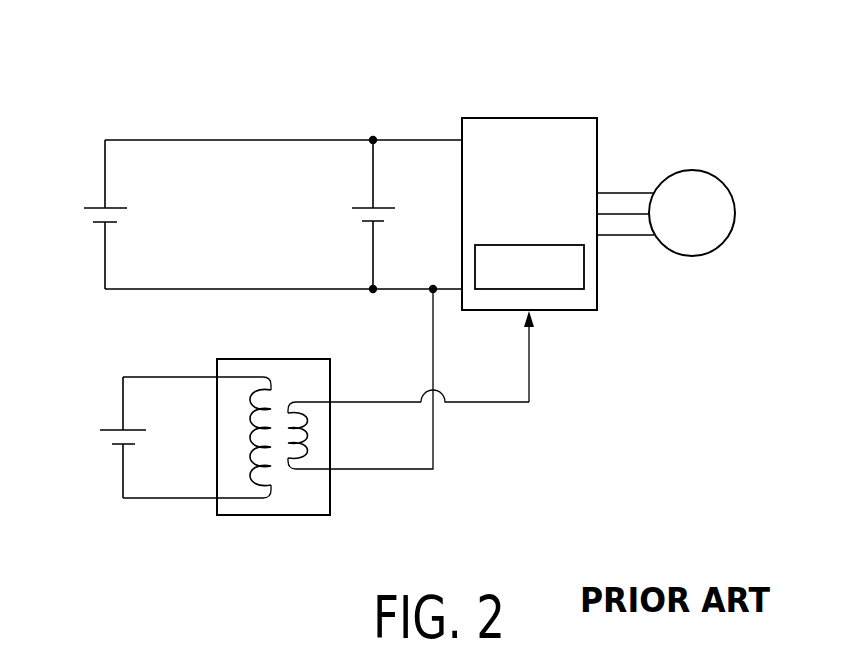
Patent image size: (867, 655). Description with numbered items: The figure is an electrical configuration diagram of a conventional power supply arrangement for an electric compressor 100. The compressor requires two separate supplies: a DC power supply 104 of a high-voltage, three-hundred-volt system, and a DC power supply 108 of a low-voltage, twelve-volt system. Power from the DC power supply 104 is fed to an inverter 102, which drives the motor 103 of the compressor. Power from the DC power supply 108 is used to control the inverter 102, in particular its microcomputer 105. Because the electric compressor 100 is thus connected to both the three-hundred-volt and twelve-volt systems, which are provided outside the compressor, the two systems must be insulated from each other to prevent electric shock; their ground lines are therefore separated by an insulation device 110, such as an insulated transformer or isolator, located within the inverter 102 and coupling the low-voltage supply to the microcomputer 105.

The electric compressor 100 is at (288, 76).
The inverter 102 is at (528, 116).
The motor 103 is at (690, 171).
The DC power supply 104 is at (80, 190).
The microcomputer 105 is at (528, 243).
The DC power supply 108 is at (98, 410).
The insulation device 110 is at (275, 518).